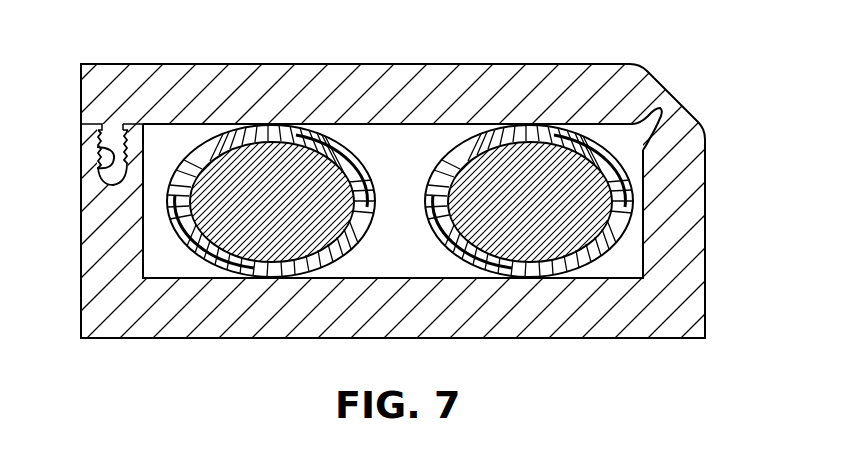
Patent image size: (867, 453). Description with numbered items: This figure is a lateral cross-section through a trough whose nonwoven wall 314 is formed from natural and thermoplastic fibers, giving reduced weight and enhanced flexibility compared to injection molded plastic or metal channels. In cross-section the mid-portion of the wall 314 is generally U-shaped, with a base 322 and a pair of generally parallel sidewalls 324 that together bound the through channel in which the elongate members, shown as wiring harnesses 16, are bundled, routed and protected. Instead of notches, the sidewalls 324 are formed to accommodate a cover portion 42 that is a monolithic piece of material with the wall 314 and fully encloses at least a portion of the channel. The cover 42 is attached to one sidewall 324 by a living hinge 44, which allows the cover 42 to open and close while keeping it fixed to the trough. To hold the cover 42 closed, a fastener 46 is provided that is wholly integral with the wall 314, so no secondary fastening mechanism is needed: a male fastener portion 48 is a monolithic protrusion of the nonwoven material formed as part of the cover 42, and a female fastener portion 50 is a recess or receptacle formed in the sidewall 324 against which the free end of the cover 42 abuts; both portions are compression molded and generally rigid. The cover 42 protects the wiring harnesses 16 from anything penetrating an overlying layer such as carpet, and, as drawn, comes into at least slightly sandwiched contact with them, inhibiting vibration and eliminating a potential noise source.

The wiring harnesses 16 is at (290, 168).
The cover portion 42 is at (448, 63).
The living hinge 44 is at (658, 112).
The fastener 46 is at (147, 128).
The male fastener portion 48 is at (97, 140).
The female fastener portion 50 is at (97, 168).
The nonwoven wall 314 is at (712, 274).
The base 322 is at (380, 278).
The sidewalls 324 is at (81, 218).